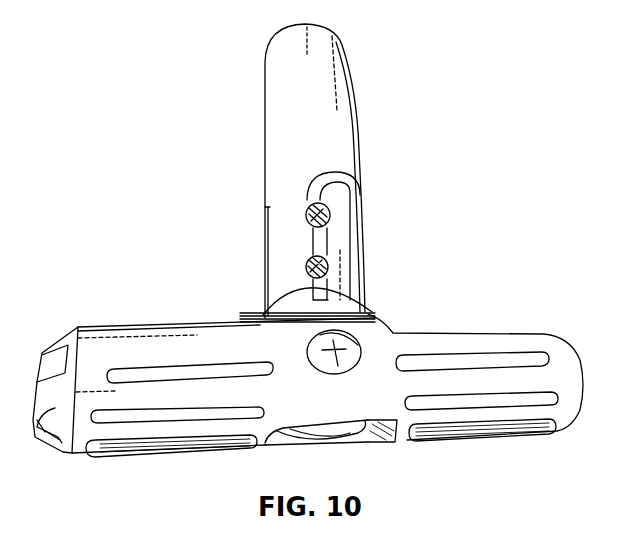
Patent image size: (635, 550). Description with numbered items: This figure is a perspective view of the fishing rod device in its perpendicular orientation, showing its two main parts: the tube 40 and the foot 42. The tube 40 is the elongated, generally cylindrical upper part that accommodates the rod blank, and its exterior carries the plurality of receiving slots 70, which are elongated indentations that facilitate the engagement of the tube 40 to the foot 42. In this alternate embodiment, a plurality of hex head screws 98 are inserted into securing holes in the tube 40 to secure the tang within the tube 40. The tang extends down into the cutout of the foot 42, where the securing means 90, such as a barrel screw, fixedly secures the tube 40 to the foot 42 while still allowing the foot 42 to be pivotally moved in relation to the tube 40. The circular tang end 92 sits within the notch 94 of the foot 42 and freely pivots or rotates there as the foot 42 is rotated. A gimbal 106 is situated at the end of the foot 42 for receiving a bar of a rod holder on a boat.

The tube 40 is at (337, 112).
The foot 42 is at (83, 448).
The plurality of receiving slots 70 is at (352, 237).
The securing means 90 is at (365, 339).
The tang end 92 is at (360, 443).
The notch 94 is at (379, 437).
The hex head screws 98 is at (306, 213).
The gimbal 106 is at (43, 433).